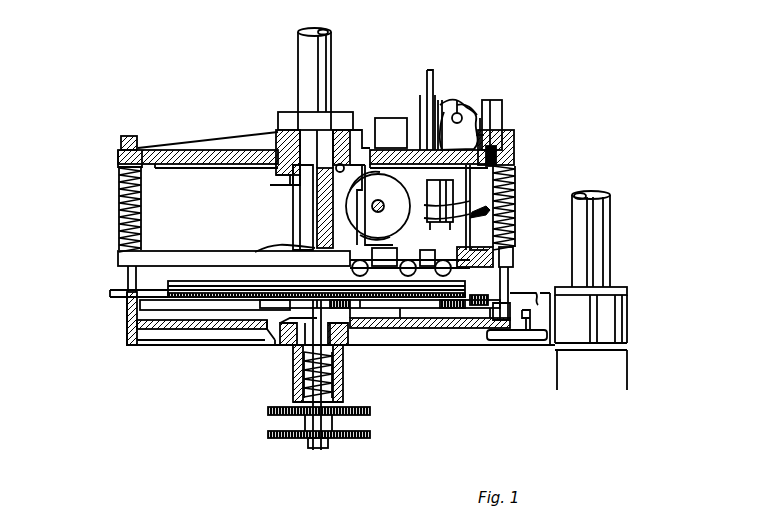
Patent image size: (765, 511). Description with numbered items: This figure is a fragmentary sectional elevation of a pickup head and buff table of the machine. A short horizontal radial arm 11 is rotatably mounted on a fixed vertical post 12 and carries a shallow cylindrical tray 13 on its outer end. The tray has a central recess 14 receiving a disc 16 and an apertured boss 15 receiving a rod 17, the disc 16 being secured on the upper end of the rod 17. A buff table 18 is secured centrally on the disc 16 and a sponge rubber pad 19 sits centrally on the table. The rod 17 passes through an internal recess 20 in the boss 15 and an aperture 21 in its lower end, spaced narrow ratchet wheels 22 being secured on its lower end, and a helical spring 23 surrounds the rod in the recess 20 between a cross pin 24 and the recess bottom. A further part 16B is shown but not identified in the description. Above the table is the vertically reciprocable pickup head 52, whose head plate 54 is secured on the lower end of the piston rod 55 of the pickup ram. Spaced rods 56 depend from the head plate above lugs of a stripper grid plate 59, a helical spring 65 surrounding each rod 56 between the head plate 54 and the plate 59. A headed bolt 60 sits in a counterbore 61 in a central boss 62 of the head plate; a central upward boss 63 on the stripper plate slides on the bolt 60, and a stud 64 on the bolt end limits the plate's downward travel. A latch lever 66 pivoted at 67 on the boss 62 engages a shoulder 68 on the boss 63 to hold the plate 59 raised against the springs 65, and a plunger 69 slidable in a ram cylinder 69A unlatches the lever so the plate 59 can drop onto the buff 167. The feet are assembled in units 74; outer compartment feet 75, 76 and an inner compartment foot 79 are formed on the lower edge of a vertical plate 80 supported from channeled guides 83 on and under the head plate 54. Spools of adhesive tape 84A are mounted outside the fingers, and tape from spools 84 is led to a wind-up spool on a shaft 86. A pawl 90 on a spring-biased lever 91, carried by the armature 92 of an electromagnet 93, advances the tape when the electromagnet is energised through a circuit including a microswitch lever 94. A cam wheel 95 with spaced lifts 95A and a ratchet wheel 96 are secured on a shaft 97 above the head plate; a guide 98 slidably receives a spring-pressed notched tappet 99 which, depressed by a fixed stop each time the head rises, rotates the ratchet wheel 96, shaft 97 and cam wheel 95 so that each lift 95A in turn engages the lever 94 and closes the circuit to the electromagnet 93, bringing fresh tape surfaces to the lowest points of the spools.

The radial arm 11 is at (520, 346).
The fixed vertical post 12 is at (606, 260).
The cylindrical tray 13 is at (146, 344).
The central recess 14 is at (380, 332).
The apertured boss 15 is at (292, 380).
The disc 16 is at (238, 330).
The support leg 16B is at (558, 354).
The rod 17 is at (310, 446).
The buff table 18 is at (192, 338).
The sponge rubber pad 19 is at (440, 336).
The internal recess 20 is at (342, 394).
The aperture 21 is at (286, 404).
The ratchet wheels 22 is at (368, 432).
The helical spring 23 is at (338, 378).
The cross pin 24 is at (290, 358).
The pickup head 52 is at (184, 129).
The head plate 54 is at (204, 148).
The piston rod 55 is at (298, 50).
The spaced rods 56 is at (504, 289).
The stripper grid plate 59 is at (170, 254).
The headed bolt 60 is at (290, 180).
The counterbore 61 is at (298, 82).
The central boss 62 is at (272, 134).
The central upward boss 63 is at (294, 218).
The stud 64 is at (256, 250).
The helical spring 65 is at (124, 202).
The latch lever 66 is at (358, 128).
The pivot 67 is at (340, 108).
The shoulder 68 is at (274, 198).
The plunger 69 is at (380, 118).
The ram cylinder 69A is at (429, 129).
The unit 74 is at (495, 228).
The outer compartment foot 75 is at (410, 332).
The outer compartment foot 76 is at (480, 334).
The inner compartment foot 79 is at (256, 262).
The vertical plate 80 is at (510, 178).
The channeled guides 83 is at (514, 154).
The spools 84 is at (433, 200).
The spools of adhesive tape 84A is at (468, 246).
The shaft 86 is at (382, 236).
The pawl 90 is at (474, 190).
The lever 91 is at (488, 204).
The armature 92 is at (494, 230).
The electromagnet 93 is at (428, 100).
The microswitch lever 94 is at (502, 124).
The cam wheel 95 is at (480, 114).
The lifts 95A is at (480, 136).
The ratchet wheel 96 is at (458, 112).
The shaft 97 is at (464, 106).
The guide 98 is at (434, 108).
The tappet 99 is at (444, 112).
The buff 167 is at (112, 290).